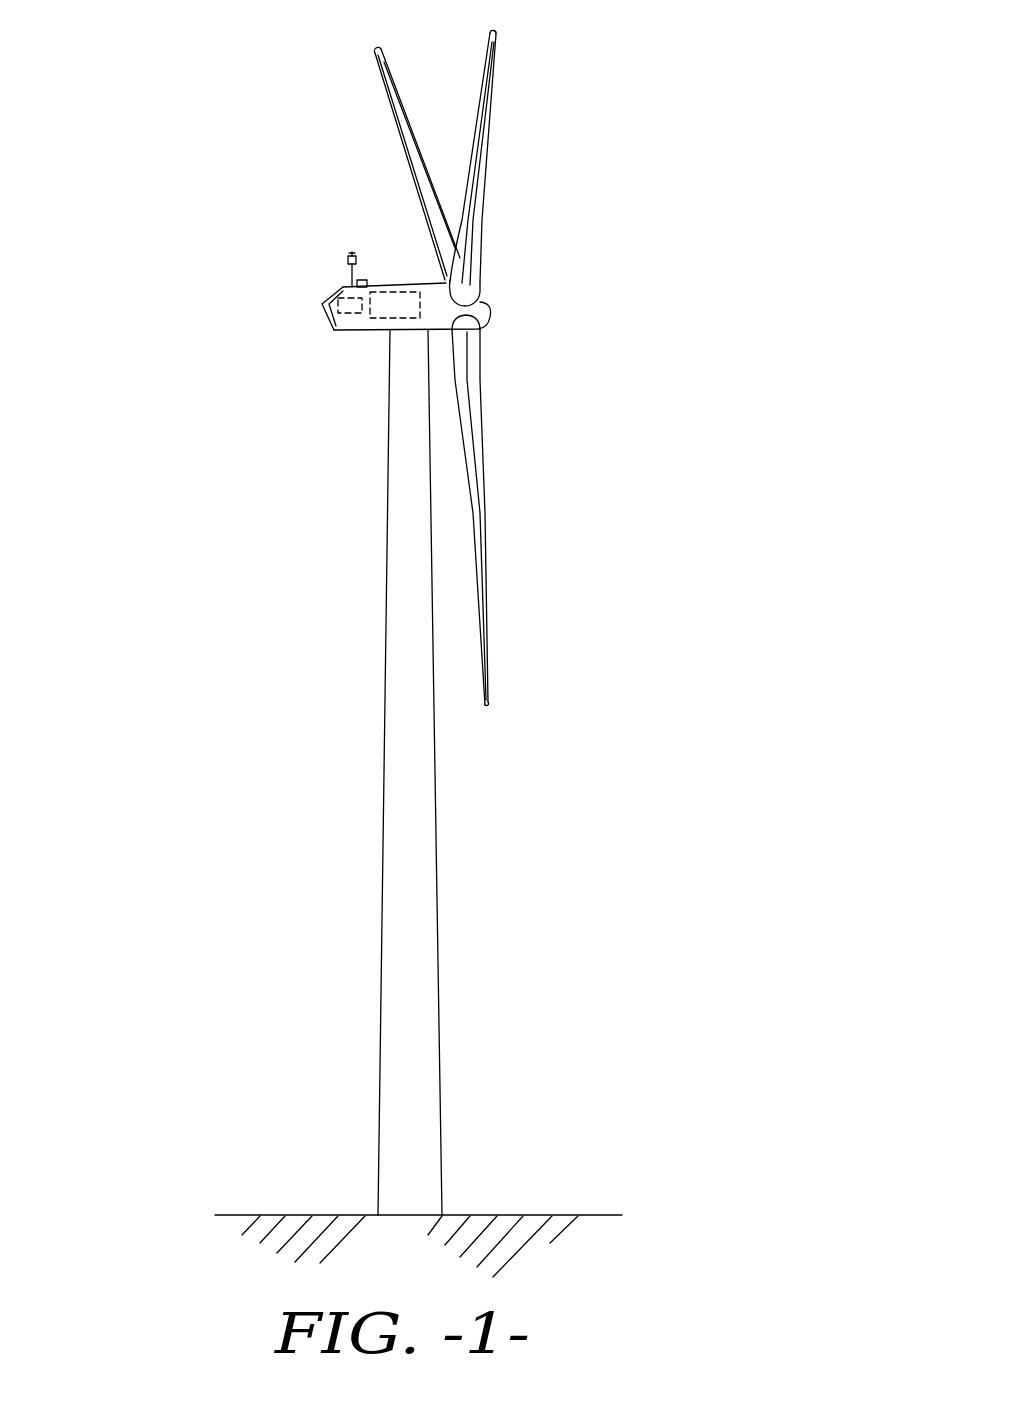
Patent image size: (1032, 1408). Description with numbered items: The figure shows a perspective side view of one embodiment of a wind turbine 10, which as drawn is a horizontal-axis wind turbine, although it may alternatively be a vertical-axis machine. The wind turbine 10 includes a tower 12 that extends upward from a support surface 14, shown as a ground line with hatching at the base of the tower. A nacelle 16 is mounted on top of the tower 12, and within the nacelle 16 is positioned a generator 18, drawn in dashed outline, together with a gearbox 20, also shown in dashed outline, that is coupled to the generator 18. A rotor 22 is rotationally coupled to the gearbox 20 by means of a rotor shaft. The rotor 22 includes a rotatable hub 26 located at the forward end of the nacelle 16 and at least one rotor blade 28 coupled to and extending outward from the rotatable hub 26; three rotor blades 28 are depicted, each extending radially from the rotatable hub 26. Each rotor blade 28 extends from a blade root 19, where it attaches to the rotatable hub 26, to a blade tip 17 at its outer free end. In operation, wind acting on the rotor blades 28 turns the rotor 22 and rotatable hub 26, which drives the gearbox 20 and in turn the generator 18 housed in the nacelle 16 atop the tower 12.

The wind turbine 10 is at (505, 609).
The tower 12 is at (382, 898).
The support surface 14 is at (300, 1213).
The nacelle 16 is at (363, 333).
The blade tip 17 is at (492, 694).
The generator 18 is at (340, 292).
The blade root 19 is at (482, 343).
The gearbox 20 is at (397, 291).
The rotor 22 is at (500, 272).
The rotatable hub 26 is at (492, 310).
The rotor blade 28 is at (405, 142).